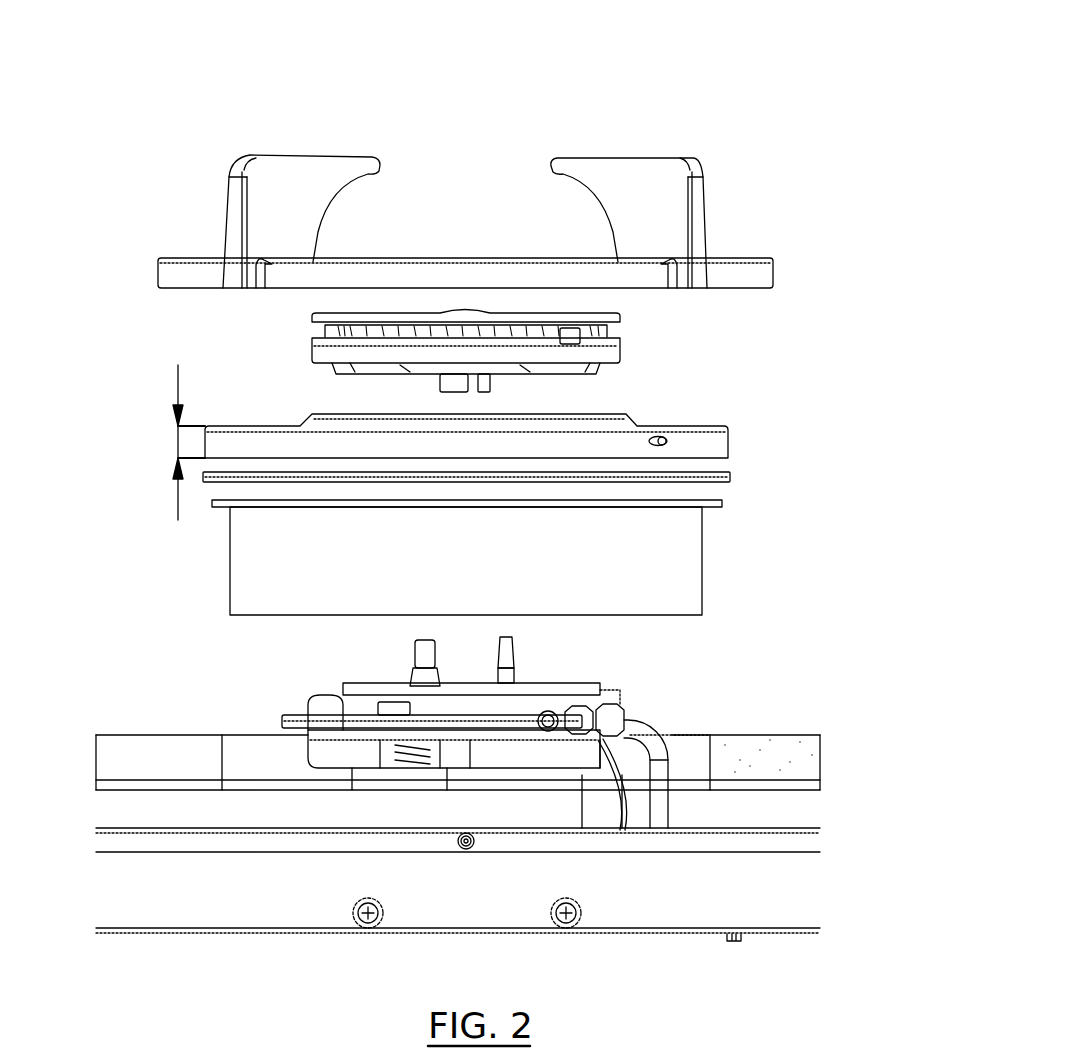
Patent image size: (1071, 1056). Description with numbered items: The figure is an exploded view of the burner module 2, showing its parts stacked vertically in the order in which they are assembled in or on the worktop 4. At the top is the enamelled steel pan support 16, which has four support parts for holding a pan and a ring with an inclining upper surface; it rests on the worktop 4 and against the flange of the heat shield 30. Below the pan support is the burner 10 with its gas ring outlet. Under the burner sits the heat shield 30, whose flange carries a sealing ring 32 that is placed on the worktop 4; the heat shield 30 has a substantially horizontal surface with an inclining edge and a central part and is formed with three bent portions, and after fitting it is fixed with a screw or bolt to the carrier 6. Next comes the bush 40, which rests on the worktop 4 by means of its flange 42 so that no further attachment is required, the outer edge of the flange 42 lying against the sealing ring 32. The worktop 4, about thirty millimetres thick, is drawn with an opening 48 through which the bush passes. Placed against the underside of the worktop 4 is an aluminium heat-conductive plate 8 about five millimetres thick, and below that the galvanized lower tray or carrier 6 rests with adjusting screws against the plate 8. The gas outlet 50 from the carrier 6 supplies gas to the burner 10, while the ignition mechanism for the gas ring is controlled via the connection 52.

The burner module 2 is at (717, 121).
The pan support 16 is at (718, 215).
The burner 10 is at (680, 352).
The heat shield 30 is at (712, 446).
The sealing ring 32 is at (725, 478).
The flange 42 is at (715, 505).
The bush 40 is at (262, 565).
The gas outlet 50 is at (650, 735).
The countertop opening 48 is at (697, 728).
The worktop 4 is at (806, 760).
The heat-conductive plate 8 is at (163, 785).
The connection 52 is at (612, 772).
The carrier 6 is at (666, 884).